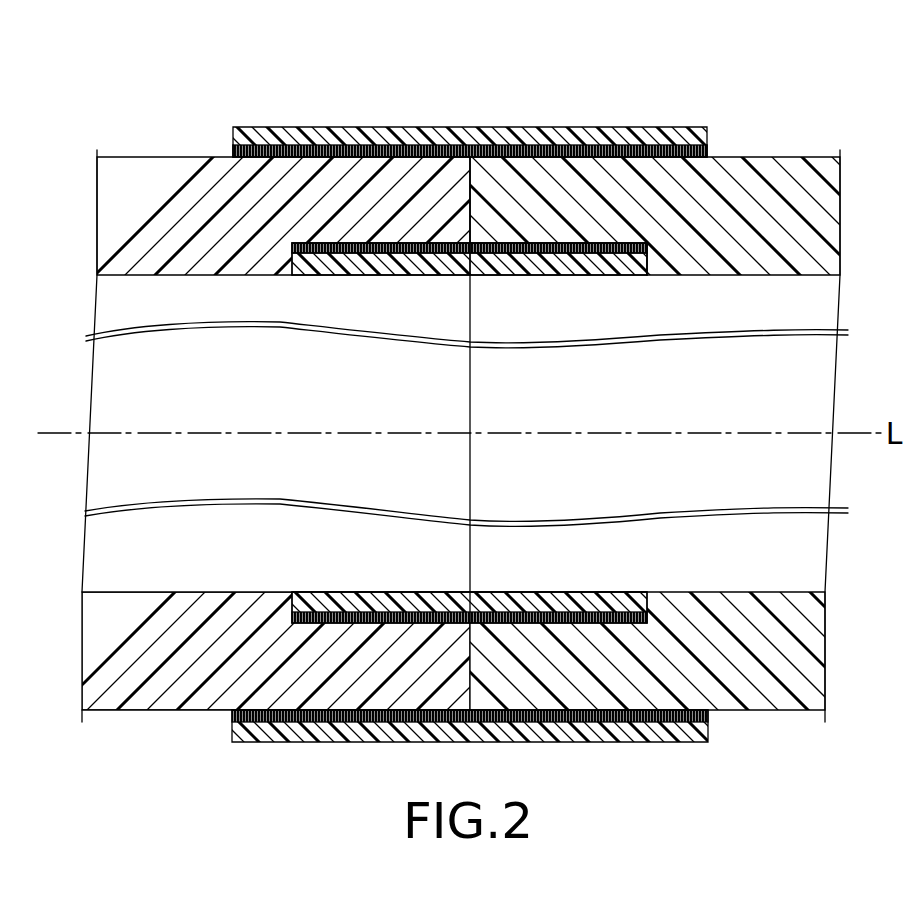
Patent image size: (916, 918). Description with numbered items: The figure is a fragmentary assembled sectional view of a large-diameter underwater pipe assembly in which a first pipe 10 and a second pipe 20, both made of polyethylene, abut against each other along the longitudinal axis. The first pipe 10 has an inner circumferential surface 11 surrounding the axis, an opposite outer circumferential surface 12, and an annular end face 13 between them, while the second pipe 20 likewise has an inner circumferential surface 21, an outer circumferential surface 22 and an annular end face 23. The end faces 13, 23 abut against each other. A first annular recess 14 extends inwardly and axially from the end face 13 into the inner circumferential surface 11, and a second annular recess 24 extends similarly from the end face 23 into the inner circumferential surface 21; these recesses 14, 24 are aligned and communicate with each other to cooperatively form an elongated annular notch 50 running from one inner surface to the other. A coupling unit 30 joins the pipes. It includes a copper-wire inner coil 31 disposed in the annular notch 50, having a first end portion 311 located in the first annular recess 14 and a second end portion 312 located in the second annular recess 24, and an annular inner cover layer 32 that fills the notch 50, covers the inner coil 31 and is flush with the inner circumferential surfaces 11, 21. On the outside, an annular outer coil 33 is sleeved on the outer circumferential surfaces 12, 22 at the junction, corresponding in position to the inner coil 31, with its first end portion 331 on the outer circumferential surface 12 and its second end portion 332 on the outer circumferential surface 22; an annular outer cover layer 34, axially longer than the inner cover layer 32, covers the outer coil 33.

The first pipe 10 is at (426, 390).
The inner circumferential surface 11 is at (97, 283).
The outer circumferential surface 12 is at (173, 157).
The annular end face 13 is at (470, 197).
The first annular recess 14 is at (293, 273).
The second pipe 20 is at (648, 389).
The inner circumferential surface 21 is at (748, 277).
The outer circumferential surface 22 is at (783, 157).
The annular end face 23 is at (473, 220).
The second annular recess 24 is at (648, 267).
The coupling unit 30 is at (477, 86).
The inner coil 31 is at (475, 172).
The inner cover layer 32 is at (397, 270).
The outer coil 33 is at (392, 147).
The outer cover layer 34 is at (550, 140).
The annular notch 50 is at (594, 623).
The first end portion 311 is at (292, 247).
The second end portion 312 is at (648, 263).
The first end portion 331 is at (250, 150).
The second end portion 332 is at (700, 147).